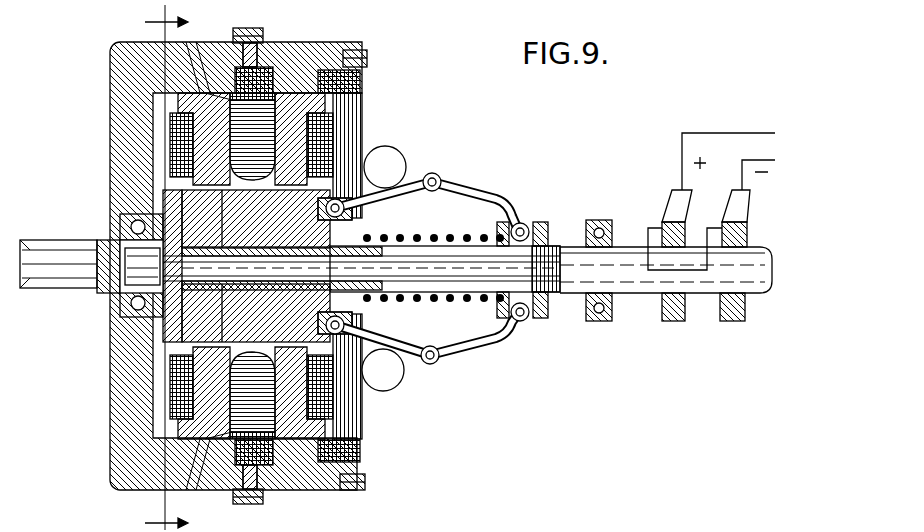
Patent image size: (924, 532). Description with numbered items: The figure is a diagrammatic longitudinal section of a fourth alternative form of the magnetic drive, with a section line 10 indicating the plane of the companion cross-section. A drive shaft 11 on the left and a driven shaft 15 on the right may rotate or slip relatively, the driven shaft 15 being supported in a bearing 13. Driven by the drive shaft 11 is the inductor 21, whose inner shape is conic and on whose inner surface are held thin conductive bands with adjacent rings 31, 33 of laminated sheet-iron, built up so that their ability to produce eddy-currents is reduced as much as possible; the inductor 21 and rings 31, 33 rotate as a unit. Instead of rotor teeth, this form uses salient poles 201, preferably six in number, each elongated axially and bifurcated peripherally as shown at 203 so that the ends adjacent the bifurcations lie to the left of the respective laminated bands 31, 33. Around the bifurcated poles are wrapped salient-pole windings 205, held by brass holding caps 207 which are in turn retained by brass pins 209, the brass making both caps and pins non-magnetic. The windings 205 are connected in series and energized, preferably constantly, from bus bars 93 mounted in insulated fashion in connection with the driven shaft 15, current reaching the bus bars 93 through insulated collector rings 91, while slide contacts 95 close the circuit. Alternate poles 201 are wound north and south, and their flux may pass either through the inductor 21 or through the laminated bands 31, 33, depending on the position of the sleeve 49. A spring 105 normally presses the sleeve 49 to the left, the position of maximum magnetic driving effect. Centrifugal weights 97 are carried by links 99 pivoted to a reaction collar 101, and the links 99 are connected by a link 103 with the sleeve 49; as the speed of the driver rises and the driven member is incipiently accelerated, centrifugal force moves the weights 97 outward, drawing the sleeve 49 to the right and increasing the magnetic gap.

The section line 10 is at (148, 268).
The drive shaft 11 is at (66, 250).
The bearing 13 is at (600, 323).
The driven shaft 15 is at (752, 296).
The inductor 21 is at (118, 68).
The ring 31 is at (229, 68).
The ring 33 is at (362, 77).
The sleeve 49 is at (353, 233).
The collector rings 91 is at (662, 220).
The bus bars 93 is at (622, 272).
The slide contacts 95 is at (185, 305).
The centrifugal weights 97 is at (397, 165).
The links 99 is at (472, 190).
The reaction collar 101 is at (527, 223).
The link 103 is at (399, 191).
The spring 105 is at (443, 295).
The salient poles 201 is at (333, 140).
The bifurcation 203 is at (263, 120).
The salient-pole windings 205 is at (170, 135).
The holding caps 207 is at (330, 108).
The brass pins 209 is at (192, 110).